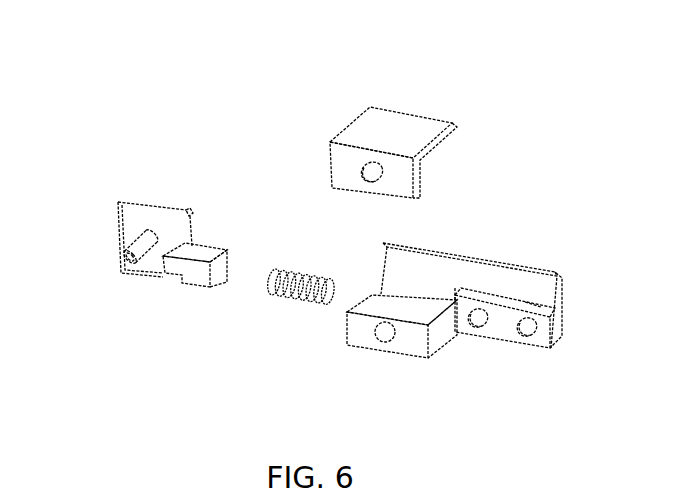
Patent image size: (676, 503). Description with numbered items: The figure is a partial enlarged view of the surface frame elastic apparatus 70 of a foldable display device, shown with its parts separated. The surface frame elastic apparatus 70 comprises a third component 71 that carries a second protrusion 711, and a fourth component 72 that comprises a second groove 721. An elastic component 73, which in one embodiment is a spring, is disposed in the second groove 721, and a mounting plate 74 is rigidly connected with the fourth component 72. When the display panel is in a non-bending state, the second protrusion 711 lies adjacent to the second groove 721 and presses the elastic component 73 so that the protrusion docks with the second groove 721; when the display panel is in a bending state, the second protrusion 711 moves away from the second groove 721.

The surface frame elastic apparatus 70 is at (62, 47).
The third component 71 is at (150, 222).
The second protrusion 711 is at (192, 265).
The fourth component 72 is at (438, 272).
The second groove 721 is at (413, 340).
The elastic component 73 is at (297, 280).
The mounting plate 74 is at (395, 183).